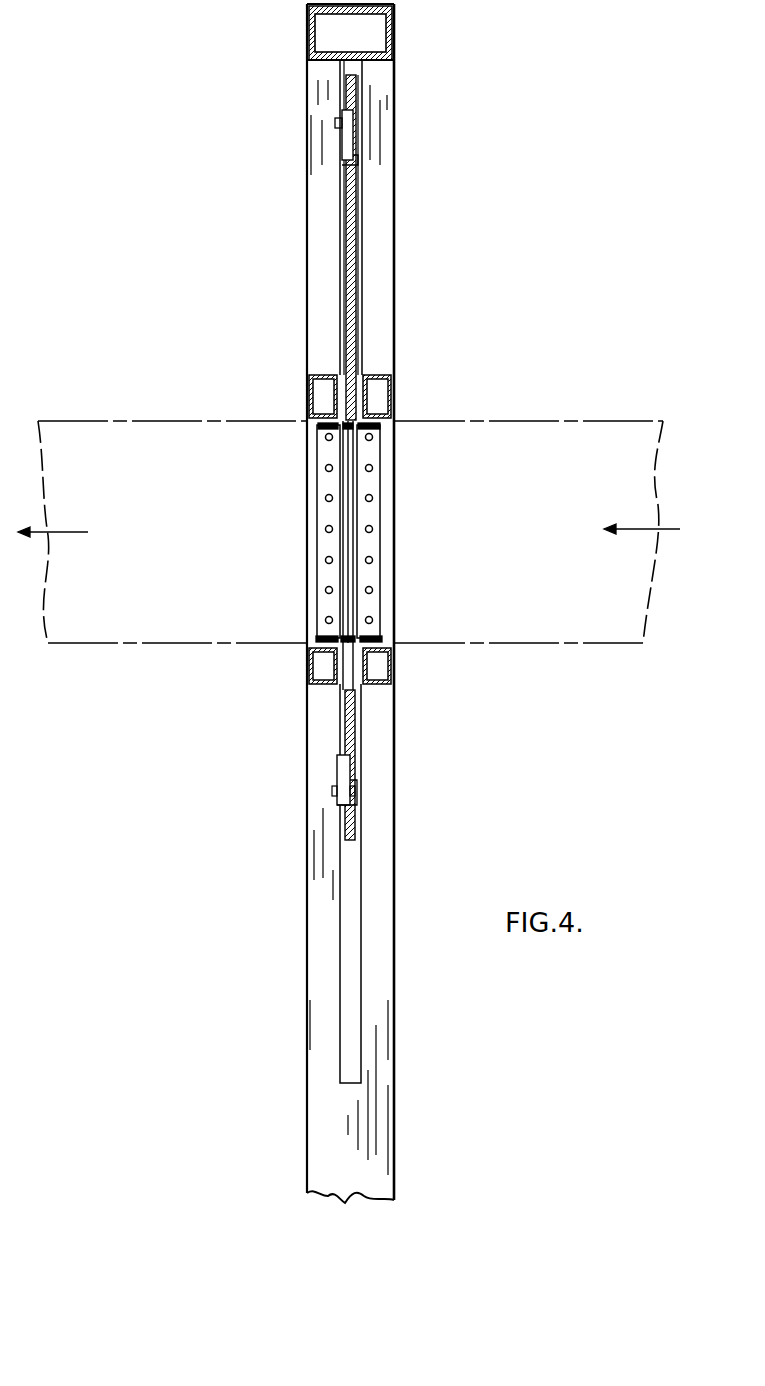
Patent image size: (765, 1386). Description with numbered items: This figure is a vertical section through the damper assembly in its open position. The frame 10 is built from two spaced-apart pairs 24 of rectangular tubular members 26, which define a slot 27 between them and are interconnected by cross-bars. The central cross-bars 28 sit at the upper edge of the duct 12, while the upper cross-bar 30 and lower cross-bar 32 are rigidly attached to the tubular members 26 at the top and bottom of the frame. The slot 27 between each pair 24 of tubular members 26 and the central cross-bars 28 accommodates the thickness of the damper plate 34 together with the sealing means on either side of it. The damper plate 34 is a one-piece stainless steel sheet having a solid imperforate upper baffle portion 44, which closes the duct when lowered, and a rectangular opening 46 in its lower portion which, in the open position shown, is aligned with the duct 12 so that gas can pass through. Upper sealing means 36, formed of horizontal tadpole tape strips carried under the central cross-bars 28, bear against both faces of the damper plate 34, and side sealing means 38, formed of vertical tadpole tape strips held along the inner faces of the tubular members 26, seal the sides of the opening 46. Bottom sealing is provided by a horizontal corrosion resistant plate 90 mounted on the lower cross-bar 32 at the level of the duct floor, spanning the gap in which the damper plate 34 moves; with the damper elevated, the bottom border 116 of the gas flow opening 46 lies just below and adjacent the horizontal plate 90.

The frame 10 is at (387, 603).
The duct 12 is at (161, 414).
The pairs of tubular members 24 is at (404, 110).
The rectangular tubular members 26 is at (323, 221).
The slot 27 is at (343, 345).
The central cross-bars 28 is at (370, 375).
The upper cross-bar 30 is at (394, 38).
The lower cross-bar 32 is at (380, 665).
The damper plate 34 is at (350, 340).
The upper sealing means 36 is at (366, 428).
The side sealing means 38 is at (328, 513).
The upper baffle portion 44 is at (346, 282).
The rectangular opening 46 is at (360, 603).
The horizontal plate 90 is at (366, 638).
The bottom border of gas flow opening 116 is at (346, 690).